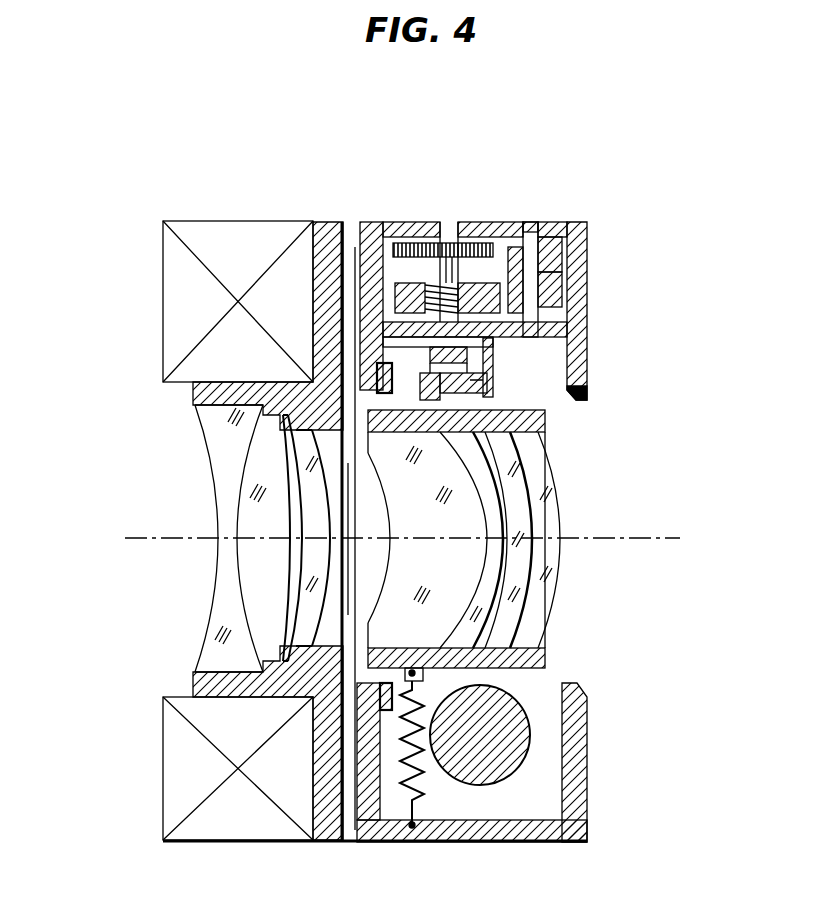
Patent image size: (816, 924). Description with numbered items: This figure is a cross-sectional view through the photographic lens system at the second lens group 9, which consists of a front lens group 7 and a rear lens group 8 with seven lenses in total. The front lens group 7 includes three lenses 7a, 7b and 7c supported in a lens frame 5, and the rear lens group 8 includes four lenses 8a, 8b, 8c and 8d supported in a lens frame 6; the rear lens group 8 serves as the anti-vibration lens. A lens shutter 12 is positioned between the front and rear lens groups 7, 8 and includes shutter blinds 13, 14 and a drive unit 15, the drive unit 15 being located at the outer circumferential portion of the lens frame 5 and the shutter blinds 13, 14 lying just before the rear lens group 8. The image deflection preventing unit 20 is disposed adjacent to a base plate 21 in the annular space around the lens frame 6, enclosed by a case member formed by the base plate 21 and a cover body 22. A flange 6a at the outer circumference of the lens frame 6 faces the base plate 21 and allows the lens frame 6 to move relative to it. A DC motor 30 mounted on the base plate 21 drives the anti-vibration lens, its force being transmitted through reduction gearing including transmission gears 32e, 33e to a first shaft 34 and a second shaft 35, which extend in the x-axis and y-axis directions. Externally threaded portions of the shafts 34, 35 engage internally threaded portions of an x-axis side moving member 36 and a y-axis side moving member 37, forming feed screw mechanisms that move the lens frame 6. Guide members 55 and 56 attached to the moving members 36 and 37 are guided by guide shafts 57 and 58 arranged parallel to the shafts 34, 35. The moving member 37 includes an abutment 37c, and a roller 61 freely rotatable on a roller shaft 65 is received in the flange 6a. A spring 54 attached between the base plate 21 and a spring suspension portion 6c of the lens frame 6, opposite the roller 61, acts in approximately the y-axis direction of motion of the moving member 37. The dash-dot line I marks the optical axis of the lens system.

The image deflection preventing unit 20 is at (556, 178).
The base plate 21 is at (372, 240).
The cover body 22 is at (578, 313).
The transmission gear 32e is at (482, 184).
The transmission gear 33e is at (489, 243).
The first shaft 34 is at (441, 238).
The second shaft 35 is at (425, 245).
The x-axis side moving member 36 is at (626, 249).
The y-axis side moving member 37 is at (558, 262).
The abutment 37c is at (470, 348).
The guide member 55 is at (622, 284).
The guide member 56 is at (565, 292).
The guide shaft 57 is at (587, 246).
The guide shaft 58 is at (560, 223).
The roller 61 is at (470, 372).
The roller shaft 65 is at (582, 360).
The lens frame 6 is at (530, 403).
The flange 6a is at (350, 295).
The spring suspension portion 6c is at (428, 677).
The rear lens group 8 is at (675, 548).
The lens 8a is at (540, 637).
The lens 8b is at (540, 615).
The lens 8c is at (540, 590).
The lens 8d is at (550, 553).
The second lens group 9 is at (182, 452).
The front lens group 7 is at (58, 552).
The lens 7a is at (250, 560).
The lens 7b is at (300, 585).
The lens 7c is at (330, 603).
The lens frame 5 is at (252, 683).
The lens shutter 12 is at (335, 596).
The shutter blind 13 is at (357, 478).
The shutter blind 14 is at (357, 596).
The drive unit 15 is at (215, 812).
The DC motor 30 is at (528, 752).
The spring 54 is at (412, 786).
The optical axis I is at (140, 535).